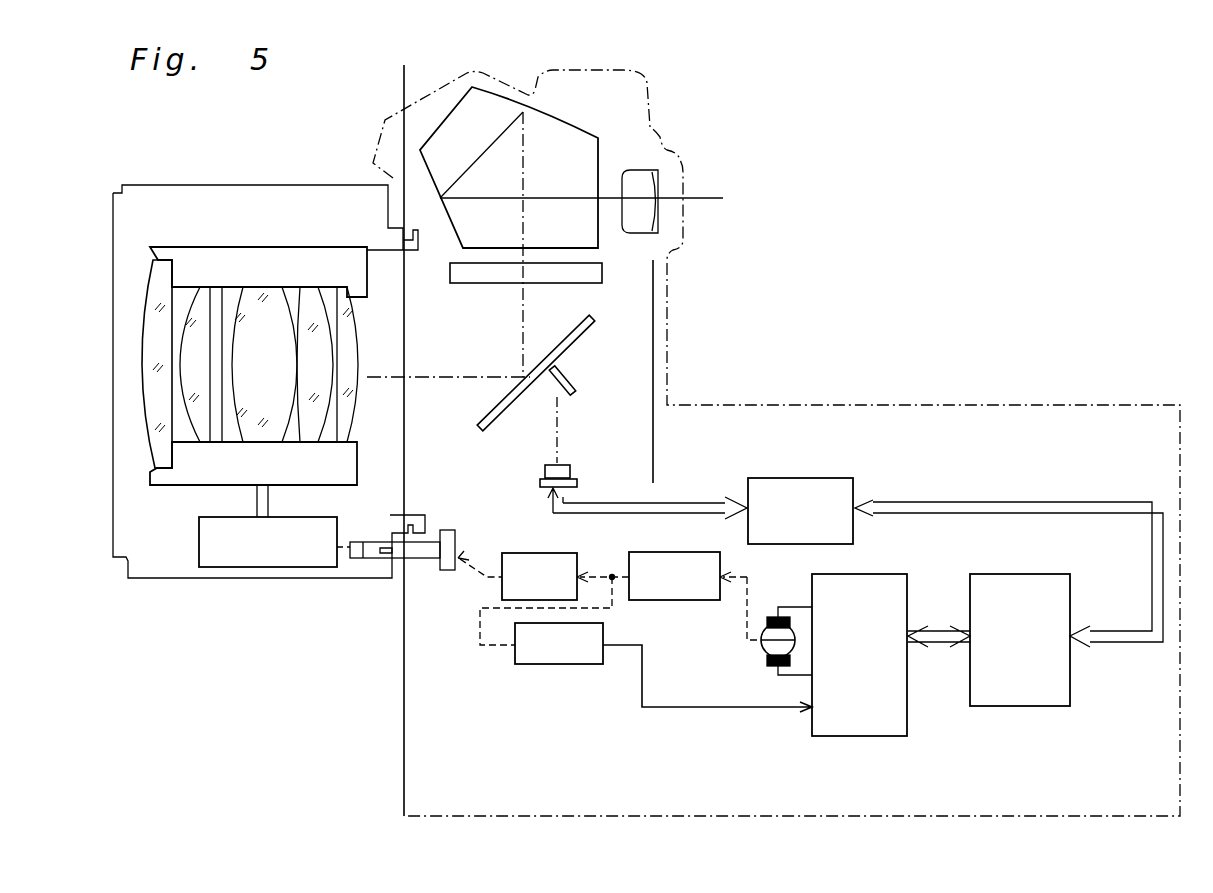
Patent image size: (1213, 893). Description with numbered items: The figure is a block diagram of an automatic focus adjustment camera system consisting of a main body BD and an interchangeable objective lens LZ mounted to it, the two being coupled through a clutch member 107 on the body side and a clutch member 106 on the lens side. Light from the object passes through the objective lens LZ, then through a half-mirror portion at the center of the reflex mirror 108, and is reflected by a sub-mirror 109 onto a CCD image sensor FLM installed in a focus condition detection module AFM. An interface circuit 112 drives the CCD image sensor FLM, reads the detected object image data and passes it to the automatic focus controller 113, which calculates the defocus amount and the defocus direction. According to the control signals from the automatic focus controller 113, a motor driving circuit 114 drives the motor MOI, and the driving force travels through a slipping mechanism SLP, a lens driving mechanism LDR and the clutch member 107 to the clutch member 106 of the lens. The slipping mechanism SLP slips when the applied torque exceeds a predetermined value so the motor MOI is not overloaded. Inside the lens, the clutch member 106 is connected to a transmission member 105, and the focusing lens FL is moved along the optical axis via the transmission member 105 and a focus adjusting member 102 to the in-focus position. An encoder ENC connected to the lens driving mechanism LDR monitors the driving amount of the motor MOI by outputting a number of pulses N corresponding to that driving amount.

The focus adjusting member 102 is at (180, 473).
The transmission member 105 is at (233, 567).
The clutch member 106 is at (363, 552).
The clutch member 107 is at (427, 560).
The reflex mirror 108 is at (598, 322).
The sub-mirror 109 is at (576, 386).
The interface circuit 112 is at (797, 478).
The automatic focus controller 113 is at (1027, 706).
The motor driving circuit 114 is at (878, 736).
The objective lens LZ is at (177, 185).
The focusing lens FL is at (157, 338).
The main body BD is at (672, 135).
The CCD image sensor FLM is at (563, 463).
The focus condition detection module AFM is at (545, 470).
The lens driving mechanism LDR is at (535, 553).
The slipping mechanism SLP is at (678, 600).
The motor MOI is at (763, 650).
The encoder ENC is at (555, 664).
The number of pulses N is at (939, 654).